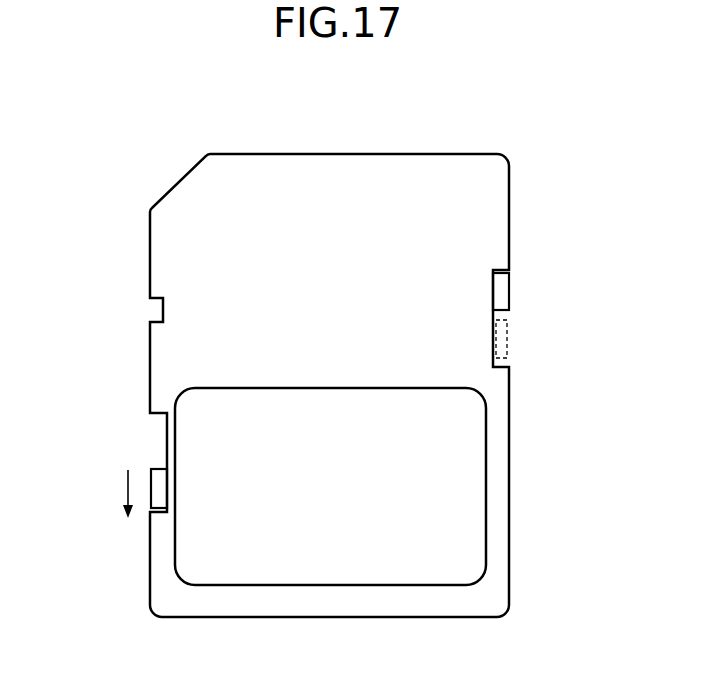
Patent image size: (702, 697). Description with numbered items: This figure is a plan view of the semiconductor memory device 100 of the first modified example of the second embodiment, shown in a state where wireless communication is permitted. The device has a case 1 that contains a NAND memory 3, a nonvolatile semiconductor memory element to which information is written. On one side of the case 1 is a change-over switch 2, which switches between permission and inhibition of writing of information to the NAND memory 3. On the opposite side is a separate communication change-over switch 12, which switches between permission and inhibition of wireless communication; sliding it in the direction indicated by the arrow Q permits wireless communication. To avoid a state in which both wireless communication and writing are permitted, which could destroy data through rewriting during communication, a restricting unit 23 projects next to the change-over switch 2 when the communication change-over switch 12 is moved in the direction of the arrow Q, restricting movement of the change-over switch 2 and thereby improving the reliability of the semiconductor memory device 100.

The semiconductor memory device 100 is at (108, 122).
The case 1 is at (510, 205).
The change-over switch 2 is at (502, 290).
The restricting unit 23 is at (507, 343).
The NAND memory 3 is at (470, 497).
The communication change-over switch 12 is at (158, 483).
The arrow Q is at (125, 490).